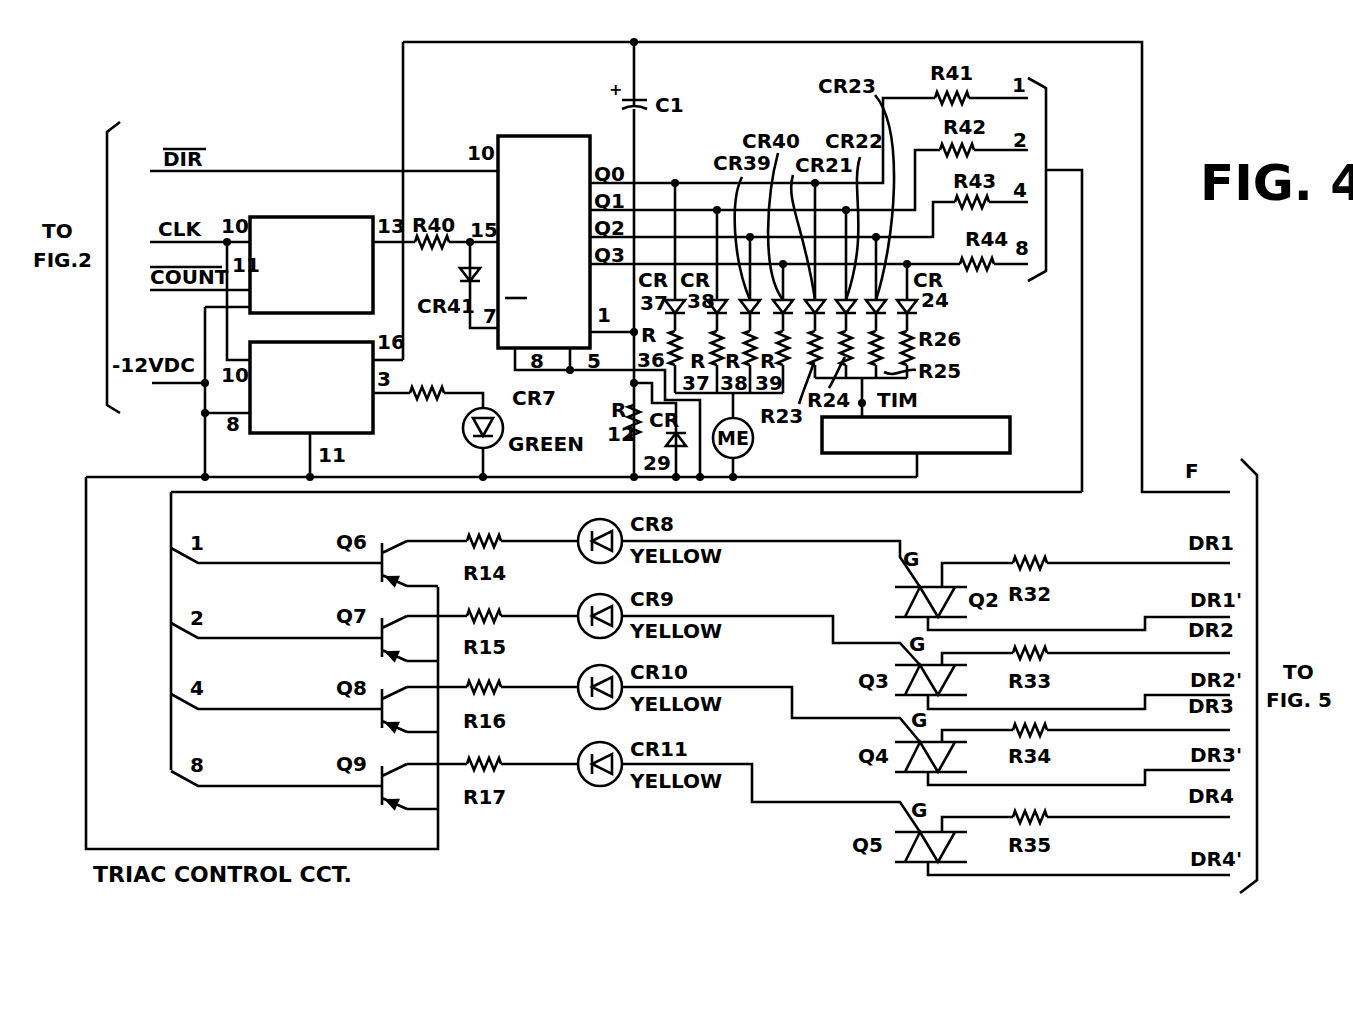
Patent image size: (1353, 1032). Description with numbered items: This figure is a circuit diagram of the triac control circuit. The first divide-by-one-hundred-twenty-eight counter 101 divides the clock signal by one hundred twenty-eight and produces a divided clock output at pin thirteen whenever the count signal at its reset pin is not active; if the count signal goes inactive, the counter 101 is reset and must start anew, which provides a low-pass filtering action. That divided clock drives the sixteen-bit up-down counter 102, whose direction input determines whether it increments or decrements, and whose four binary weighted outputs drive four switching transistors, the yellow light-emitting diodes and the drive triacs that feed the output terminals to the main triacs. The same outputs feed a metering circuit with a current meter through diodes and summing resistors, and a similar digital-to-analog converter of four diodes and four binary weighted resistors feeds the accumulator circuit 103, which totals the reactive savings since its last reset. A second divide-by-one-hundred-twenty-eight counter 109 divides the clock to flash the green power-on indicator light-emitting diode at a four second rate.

The first divide-by-128 counter 101 is at (330, 217).
The up-down counter 102 is at (535, 136).
The accumulator circuit 103 is at (972, 417).
The divide-by-128 counter 109 is at (373, 425).